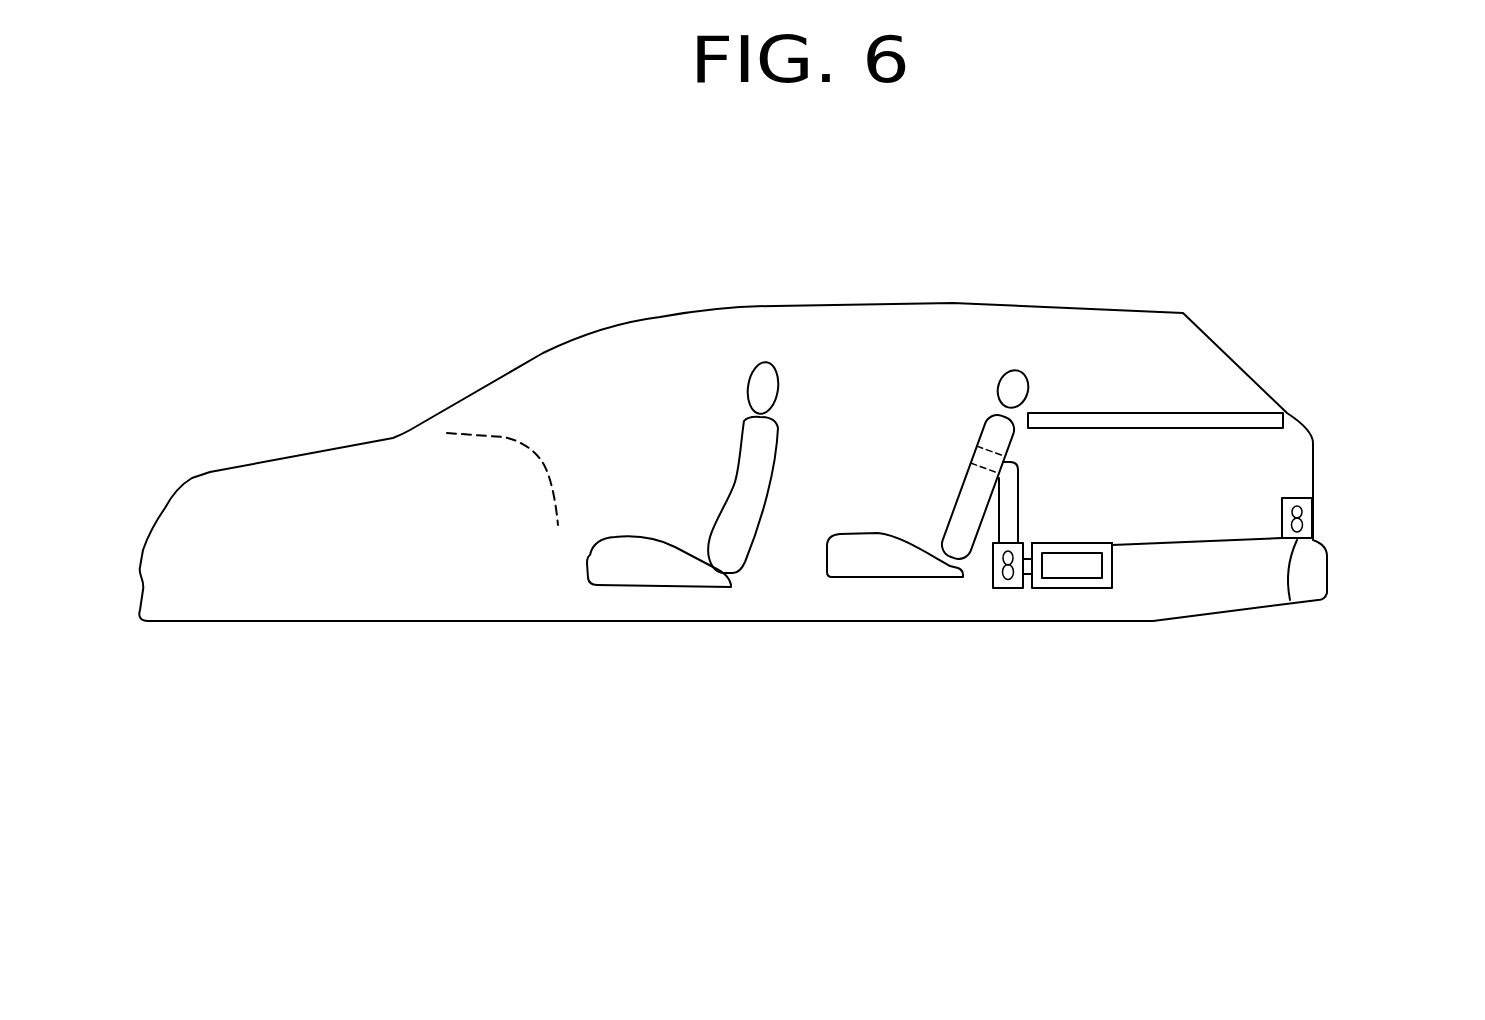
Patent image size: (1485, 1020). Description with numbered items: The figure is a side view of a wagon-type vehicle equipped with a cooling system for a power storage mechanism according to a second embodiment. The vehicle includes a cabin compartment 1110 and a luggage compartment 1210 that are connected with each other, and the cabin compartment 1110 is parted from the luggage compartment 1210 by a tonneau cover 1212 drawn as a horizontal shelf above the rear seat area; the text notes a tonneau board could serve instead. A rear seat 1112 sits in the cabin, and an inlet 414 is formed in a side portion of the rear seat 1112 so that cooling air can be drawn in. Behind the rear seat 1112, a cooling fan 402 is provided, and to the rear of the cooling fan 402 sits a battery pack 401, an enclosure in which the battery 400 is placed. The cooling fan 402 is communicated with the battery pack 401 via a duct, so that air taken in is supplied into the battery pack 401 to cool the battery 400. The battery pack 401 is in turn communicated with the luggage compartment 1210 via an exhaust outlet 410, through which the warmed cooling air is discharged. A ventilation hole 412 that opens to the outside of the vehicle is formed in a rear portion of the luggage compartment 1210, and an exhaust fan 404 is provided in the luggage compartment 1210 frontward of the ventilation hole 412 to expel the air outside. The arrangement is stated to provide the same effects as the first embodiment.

The cabin compartment 1110 is at (929, 371).
The rear seat 1112 is at (882, 575).
The inlet 414 is at (963, 458).
The luggage compartment 1210 is at (1210, 474).
The tonneau cover 1212 is at (1243, 410).
The ventilation hole 412 is at (1317, 512).
The cooling fan 402 is at (1008, 588).
The battery pack 401 is at (1070, 588).
The battery 400 is at (1102, 570).
The exhaust outlet 410 is at (1107, 532).
The exhaust fan 404 is at (1290, 600).